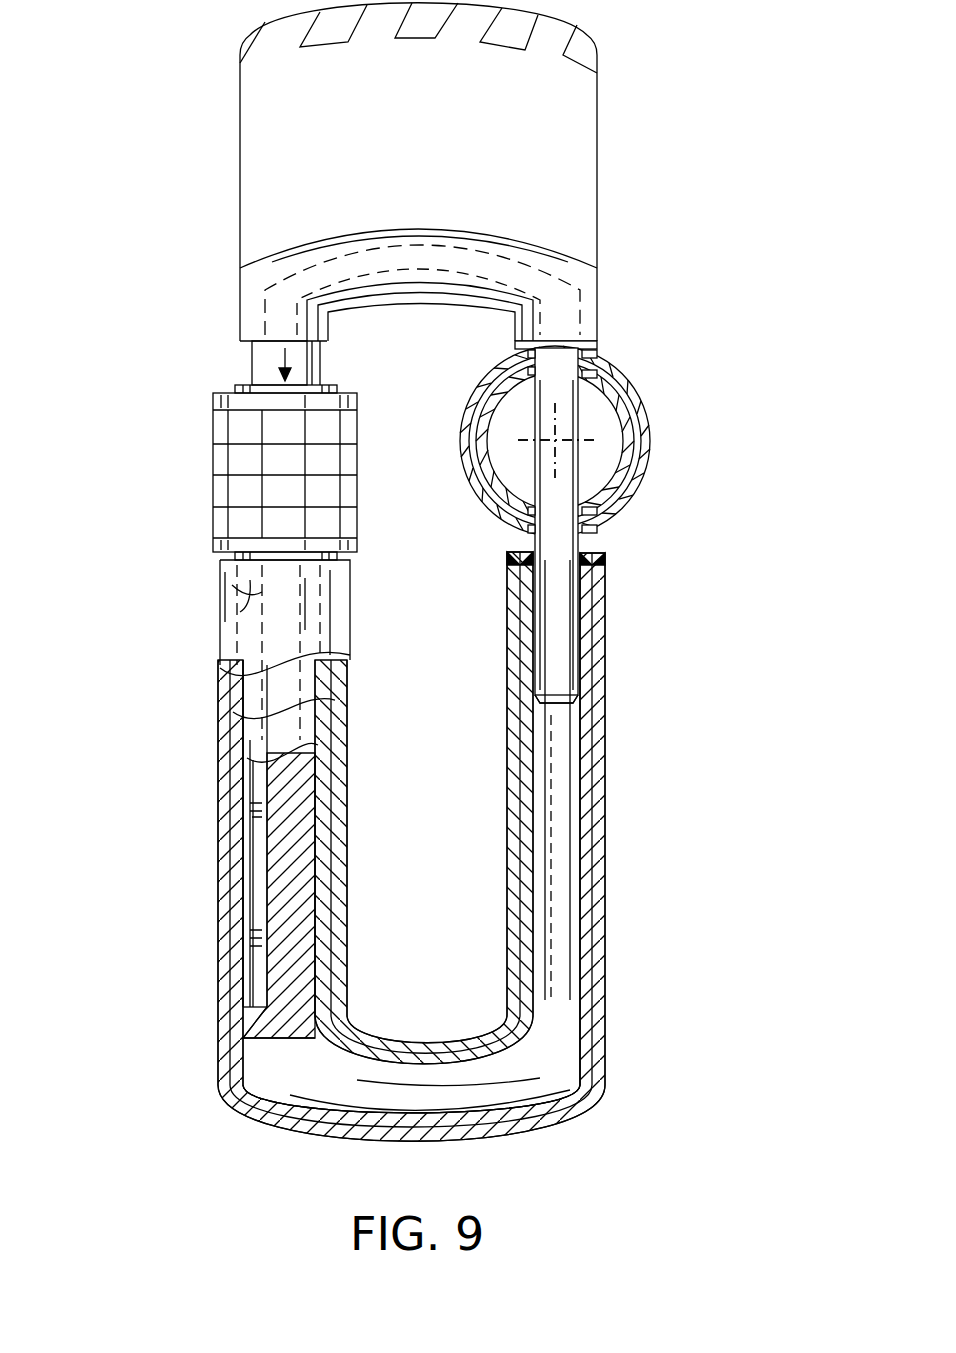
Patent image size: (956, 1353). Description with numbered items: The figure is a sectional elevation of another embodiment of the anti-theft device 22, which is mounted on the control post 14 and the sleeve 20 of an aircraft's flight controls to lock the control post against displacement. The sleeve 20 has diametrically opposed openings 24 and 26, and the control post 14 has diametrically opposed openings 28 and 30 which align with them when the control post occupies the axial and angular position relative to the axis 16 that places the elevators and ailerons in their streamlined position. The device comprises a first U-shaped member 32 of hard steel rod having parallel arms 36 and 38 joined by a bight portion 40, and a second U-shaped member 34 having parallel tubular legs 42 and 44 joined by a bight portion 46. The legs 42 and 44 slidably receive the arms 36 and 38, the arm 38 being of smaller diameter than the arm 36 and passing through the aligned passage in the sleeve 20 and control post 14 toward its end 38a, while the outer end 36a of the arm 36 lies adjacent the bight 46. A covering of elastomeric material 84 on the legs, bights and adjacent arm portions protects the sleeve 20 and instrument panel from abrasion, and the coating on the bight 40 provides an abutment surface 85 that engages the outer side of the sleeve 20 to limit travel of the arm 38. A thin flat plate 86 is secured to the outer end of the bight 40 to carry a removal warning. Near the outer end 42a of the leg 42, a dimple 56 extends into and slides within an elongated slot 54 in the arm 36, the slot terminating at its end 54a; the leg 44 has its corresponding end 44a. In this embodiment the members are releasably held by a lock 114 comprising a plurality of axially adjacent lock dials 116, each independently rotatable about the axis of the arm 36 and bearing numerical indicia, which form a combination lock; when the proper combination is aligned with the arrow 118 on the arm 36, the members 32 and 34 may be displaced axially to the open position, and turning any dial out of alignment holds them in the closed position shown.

The anti-theft device 22 is at (145, 82).
The thin flat plate 86 is at (585, 123).
The bight portion 40 is at (505, 252).
The first U-shaped member 32 is at (238, 312).
The abutment surface 85 is at (596, 345).
The opening 24 is at (590, 355).
The opening 28 is at (608, 376).
The sleeve 20 is at (636, 405).
The control post 14 is at (625, 432).
The opening 30 is at (612, 500).
The opening 26 is at (598, 528).
The axis 16 is at (555, 440).
The arm 38 is at (548, 540).
The bar lower end 38a is at (575, 688).
The arm 36 is at (248, 344).
The outer end 36a is at (303, 1027).
The arrow 118 is at (285, 358).
The outer end 42a is at (328, 383).
The lock 114 is at (180, 413).
The lock dials 116 is at (213, 520).
The dimple 56 is at (200, 587).
The tubular leg 42 is at (233, 727).
The elongated slot 54 is at (254, 856).
The tube lower end 54a is at (259, 1012).
The inner wall upper end 44a is at (590, 583).
The second U-shaped member 34 is at (218, 1073).
The tubular leg 44 is at (580, 775).
The elastomeric material covering 84 is at (595, 970).
The bight portion 46 is at (497, 1127).